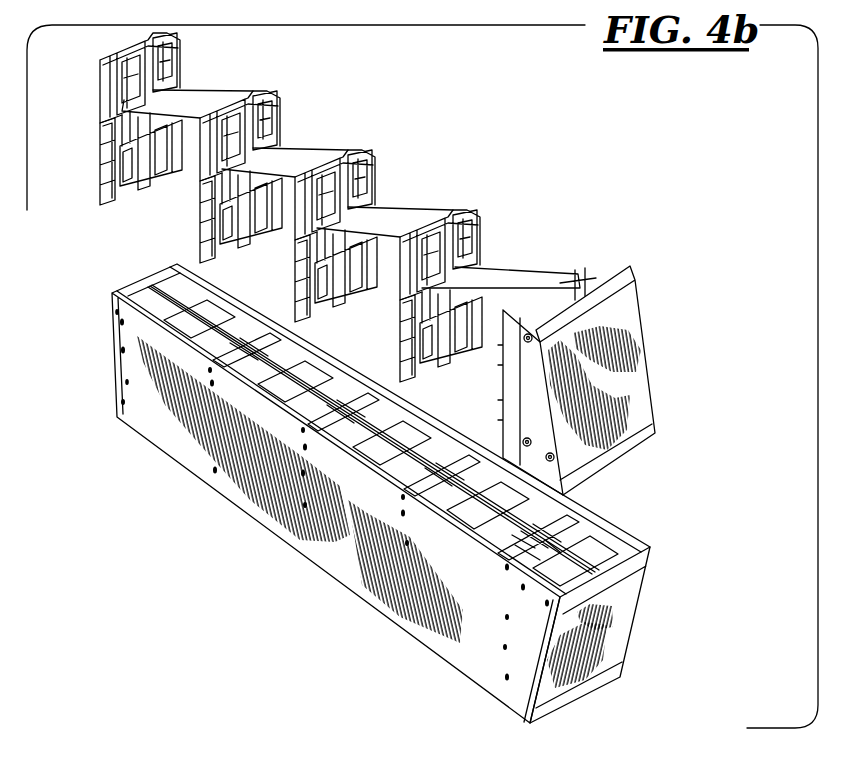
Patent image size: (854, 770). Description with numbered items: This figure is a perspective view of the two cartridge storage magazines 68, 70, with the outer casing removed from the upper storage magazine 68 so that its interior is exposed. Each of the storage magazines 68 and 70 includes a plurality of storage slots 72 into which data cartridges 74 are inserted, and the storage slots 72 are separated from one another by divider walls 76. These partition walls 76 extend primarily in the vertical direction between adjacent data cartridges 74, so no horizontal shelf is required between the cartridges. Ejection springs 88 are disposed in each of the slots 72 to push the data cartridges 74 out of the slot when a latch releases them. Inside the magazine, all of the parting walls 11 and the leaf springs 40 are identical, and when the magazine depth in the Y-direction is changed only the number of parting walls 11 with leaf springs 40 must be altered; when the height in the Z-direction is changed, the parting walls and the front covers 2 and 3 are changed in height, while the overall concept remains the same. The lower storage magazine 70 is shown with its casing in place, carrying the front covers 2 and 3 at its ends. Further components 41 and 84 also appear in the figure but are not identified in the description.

The storage magazine 68 is at (111, 44).
The storage slots 72 is at (167, 207).
The ejection springs 88 is at (220, 93).
The divider walls 76 is at (258, 99).
The leaf springs 40 is at (396, 202).
The parting walls 11 is at (300, 316).
The latch 41 is at (410, 350).
The data cartridges 74 is at (312, 378).
The side wall 84 is at (163, 417).
The storage magazine 70 is at (312, 547).
The front cover 2 is at (617, 448).
The front cover 3 is at (620, 613).